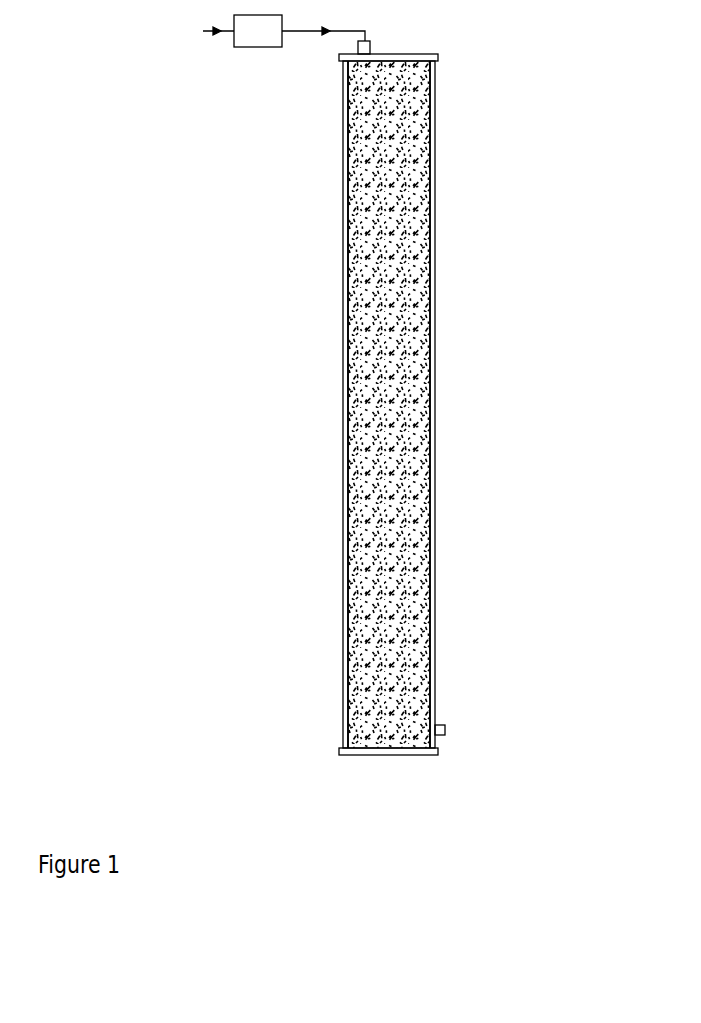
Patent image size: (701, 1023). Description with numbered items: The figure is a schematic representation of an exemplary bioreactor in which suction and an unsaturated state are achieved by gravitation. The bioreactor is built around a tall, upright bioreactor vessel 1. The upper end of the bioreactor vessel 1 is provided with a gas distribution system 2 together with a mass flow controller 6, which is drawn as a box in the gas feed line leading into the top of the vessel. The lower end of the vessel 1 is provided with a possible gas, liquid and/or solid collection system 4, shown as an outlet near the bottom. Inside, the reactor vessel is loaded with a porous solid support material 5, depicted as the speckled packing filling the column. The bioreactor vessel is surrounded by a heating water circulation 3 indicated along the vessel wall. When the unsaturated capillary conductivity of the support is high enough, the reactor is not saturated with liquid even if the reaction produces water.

The bioreactor vessel 1 is at (435, 139).
The gas distribution system 2 is at (286, 54).
The heating water circulation 3 is at (348, 174).
The gas, liquid and/or solid collection system 4 is at (455, 734).
The porous solid support material 5 is at (353, 298).
The mass flow controller 6 is at (258, 31).